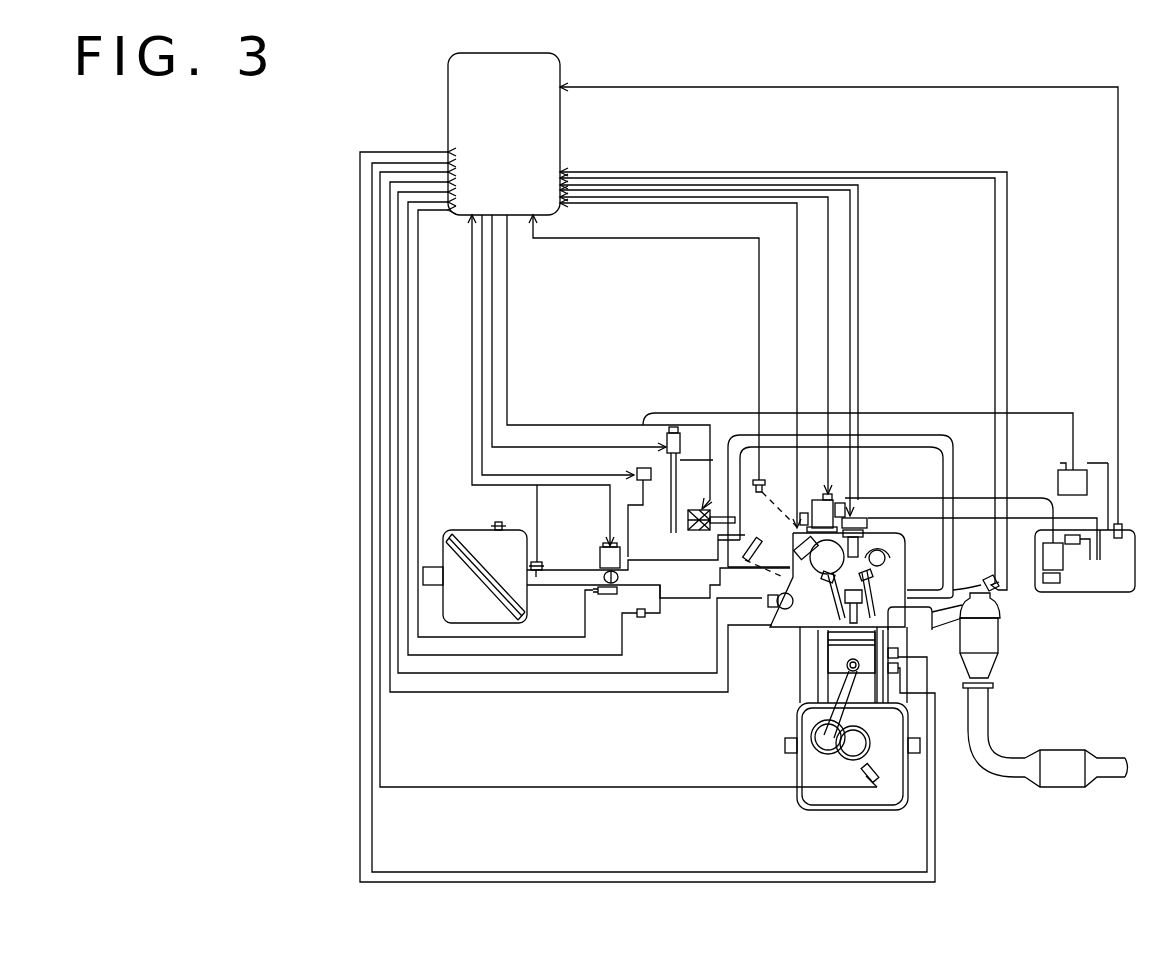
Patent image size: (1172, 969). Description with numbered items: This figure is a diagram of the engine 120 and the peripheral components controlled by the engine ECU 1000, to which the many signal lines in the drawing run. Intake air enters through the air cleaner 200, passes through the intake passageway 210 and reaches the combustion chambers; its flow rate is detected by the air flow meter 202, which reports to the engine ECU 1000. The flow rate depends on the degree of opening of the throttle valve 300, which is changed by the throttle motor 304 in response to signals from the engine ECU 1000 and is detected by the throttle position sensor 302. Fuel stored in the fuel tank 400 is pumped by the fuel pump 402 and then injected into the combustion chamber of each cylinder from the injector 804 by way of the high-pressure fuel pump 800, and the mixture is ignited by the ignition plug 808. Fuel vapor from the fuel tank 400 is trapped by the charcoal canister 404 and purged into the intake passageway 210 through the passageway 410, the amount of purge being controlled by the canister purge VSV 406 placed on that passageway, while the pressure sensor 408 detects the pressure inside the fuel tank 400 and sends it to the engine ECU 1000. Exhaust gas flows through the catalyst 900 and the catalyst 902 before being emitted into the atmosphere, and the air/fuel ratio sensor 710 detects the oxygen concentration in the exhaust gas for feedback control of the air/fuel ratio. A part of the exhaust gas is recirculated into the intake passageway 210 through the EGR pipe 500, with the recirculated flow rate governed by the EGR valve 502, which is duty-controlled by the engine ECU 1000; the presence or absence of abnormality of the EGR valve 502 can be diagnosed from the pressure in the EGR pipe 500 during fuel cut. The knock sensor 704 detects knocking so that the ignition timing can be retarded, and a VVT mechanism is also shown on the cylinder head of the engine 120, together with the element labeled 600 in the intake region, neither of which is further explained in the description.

The engine ECU 1000 is at (530, 54).
The engine 120 is at (766, 689).
The air cleaner 200 is at (460, 530).
The air flow meter 202 is at (560, 552).
The intake passageway 210 is at (683, 600).
The throttle valve 300 is at (598, 575).
The throttle position sensor 302 is at (608, 595).
The throttle motor 304 is at (600, 545).
The fuel tank 400 is at (1125, 592).
The fuel pump 402 is at (1063, 565).
The charcoal canister 404 is at (1087, 468).
The canister purge vacuum switching valve (VSV) 406 is at (635, 470).
The pressure sensor 408 is at (1122, 530).
The passageway 410 is at (872, 412).
The EGR pipe 500 is at (915, 435).
The EGR valve 502 is at (683, 513).
The throttle body 600 is at (748, 535).
The knock sensor 704 is at (898, 668).
The air/fuel ratio sensor 710 is at (990, 578).
The high-pressure fuel pump 800 is at (817, 492).
The injector 804 is at (800, 630).
The ignition plug 808 is at (870, 512).
The catalyst 900 is at (987, 638).
The catalyst 902 is at (1060, 780).
The variable valve timing mechanism VVT is at (873, 577).